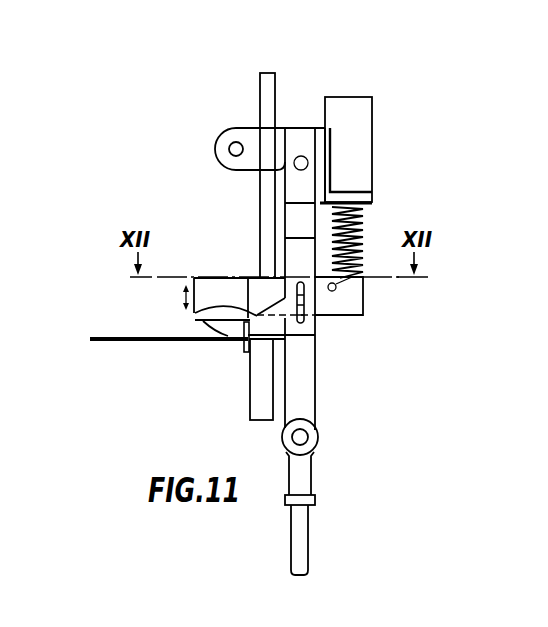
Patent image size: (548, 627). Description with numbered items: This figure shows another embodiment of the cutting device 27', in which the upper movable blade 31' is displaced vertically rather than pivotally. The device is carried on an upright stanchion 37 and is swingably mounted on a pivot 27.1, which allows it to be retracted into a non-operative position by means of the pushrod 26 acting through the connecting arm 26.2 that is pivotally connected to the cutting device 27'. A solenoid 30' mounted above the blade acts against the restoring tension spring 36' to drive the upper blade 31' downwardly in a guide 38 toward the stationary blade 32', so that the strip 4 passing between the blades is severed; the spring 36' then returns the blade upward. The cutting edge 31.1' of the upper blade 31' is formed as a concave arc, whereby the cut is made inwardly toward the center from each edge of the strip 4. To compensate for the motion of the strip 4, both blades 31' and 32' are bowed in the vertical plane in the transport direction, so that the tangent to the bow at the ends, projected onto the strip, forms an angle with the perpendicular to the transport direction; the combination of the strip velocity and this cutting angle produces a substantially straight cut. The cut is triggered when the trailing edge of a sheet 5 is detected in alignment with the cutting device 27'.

The upright stanchion 37 is at (268, 90).
The cutting device 27' is at (235, 276).
The pivot 27.1 is at (233, 142).
The solenoid 30' is at (380, 148).
The restoring tension spring 36' is at (380, 235).
The connecting arm 26.2 is at (305, 378).
The pushrod 26 is at (298, 535).
The guide 38 is at (306, 302).
The upper movable blade 31' is at (254, 272).
The stationary blade 32' is at (187, 321).
The sheet 5 is at (101, 343).
The strip 4 is at (198, 339).
The cutting edge 31.1' is at (236, 371).